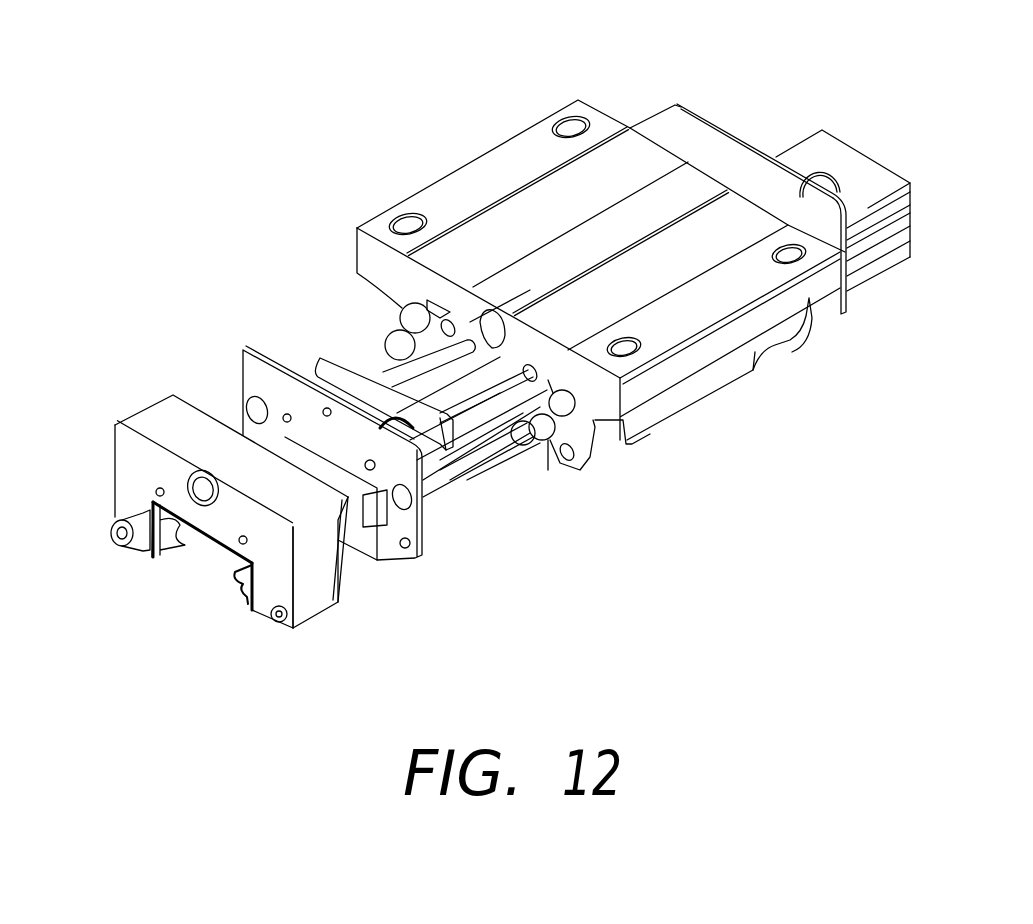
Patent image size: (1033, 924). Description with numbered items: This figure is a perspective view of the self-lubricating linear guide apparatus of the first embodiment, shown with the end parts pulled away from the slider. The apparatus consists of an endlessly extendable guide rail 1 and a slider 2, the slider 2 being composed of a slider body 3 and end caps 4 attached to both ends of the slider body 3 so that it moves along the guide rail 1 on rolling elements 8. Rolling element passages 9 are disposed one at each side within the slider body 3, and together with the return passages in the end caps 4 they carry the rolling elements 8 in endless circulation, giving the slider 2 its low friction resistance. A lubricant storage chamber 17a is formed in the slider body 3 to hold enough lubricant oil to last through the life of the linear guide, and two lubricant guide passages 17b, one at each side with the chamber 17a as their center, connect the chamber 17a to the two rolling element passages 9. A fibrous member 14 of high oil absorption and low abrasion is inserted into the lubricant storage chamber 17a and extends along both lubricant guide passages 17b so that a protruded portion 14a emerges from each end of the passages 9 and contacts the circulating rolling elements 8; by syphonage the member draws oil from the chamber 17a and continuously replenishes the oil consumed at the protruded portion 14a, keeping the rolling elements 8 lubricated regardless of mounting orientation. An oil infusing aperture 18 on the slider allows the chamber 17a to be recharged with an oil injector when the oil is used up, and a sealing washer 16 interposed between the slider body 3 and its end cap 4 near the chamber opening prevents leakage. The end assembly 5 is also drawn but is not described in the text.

The guide rail 1 is at (840, 158).
The slider 2 is at (741, 372).
The slider body 3 is at (523, 150).
The end cap 4 is at (703, 142).
The end cap 5 is at (127, 453).
The rolling elements 8 is at (542, 432).
The rolling element passage 9 is at (560, 447).
The fibrous member 14 is at (363, 362).
The protruded portion 14a is at (300, 363).
The sealing washer 16 is at (253, 377).
The lubricant storage chamber 17a is at (455, 330).
The lubricant guide passage 17b is at (403, 303).
The oil infusing aperture 18 is at (107, 525).